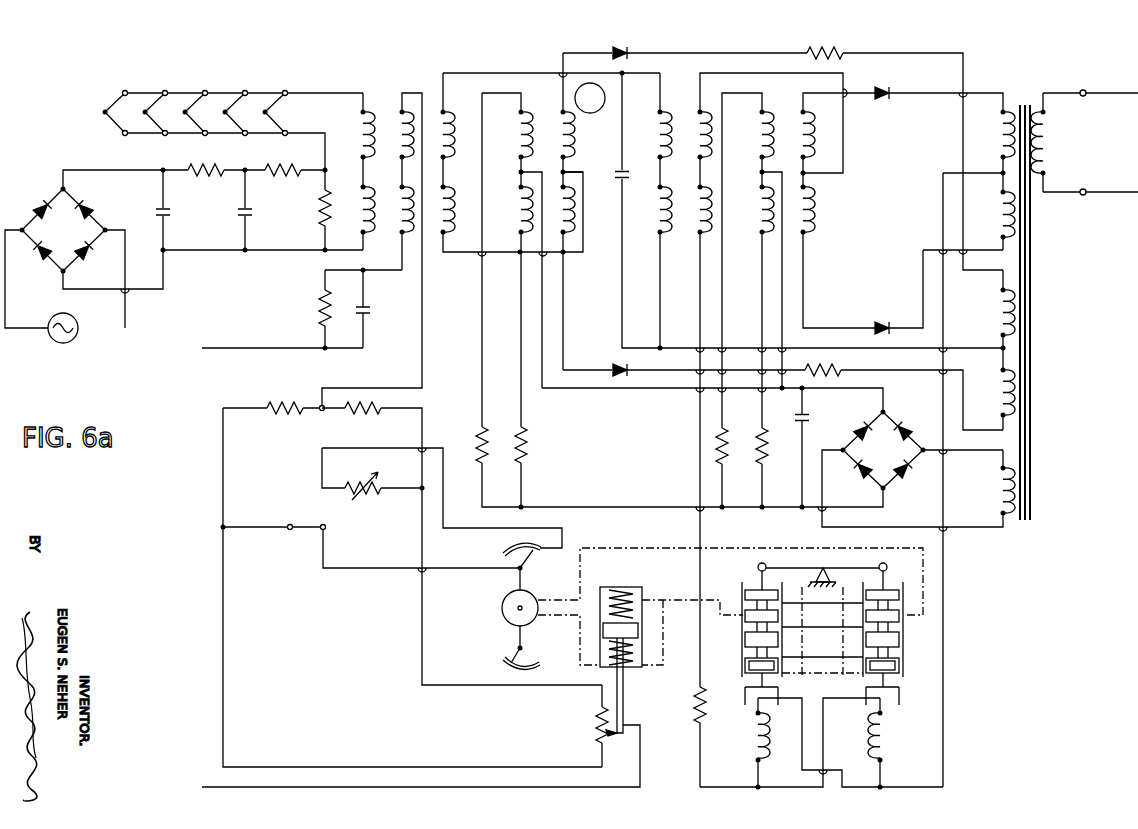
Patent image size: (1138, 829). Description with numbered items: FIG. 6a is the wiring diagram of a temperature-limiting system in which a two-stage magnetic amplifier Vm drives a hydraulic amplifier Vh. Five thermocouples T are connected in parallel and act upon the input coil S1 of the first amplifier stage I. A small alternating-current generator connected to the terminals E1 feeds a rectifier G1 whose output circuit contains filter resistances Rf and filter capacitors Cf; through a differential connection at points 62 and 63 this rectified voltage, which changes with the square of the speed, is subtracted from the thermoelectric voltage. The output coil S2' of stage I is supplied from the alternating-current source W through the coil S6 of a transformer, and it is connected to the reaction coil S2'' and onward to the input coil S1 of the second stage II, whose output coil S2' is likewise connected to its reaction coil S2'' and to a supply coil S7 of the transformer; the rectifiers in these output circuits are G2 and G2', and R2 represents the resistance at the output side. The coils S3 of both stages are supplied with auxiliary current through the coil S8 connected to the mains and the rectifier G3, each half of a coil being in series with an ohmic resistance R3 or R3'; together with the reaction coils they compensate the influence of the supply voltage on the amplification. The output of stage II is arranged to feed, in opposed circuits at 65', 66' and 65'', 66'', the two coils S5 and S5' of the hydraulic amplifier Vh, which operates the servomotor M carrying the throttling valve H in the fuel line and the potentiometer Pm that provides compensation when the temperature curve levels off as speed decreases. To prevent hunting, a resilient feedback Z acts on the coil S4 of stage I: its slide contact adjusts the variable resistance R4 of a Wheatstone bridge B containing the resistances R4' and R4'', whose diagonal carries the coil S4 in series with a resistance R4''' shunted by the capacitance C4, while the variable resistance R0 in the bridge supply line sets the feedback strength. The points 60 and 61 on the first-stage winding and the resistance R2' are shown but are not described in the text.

The terminal of primary winding 60 is at (364, 110).
The terminal of primary winding 61 is at (364, 234).
The differential connection point 62 is at (323, 252).
The differential connection point 63 is at (327, 168).
The coil circuit terminal 65' is at (741, 723).
The coil circuit terminal 65'' is at (863, 766).
The coil circuit terminal 66' is at (777, 771).
The coil circuit terminal 66'' is at (906, 723).
The thermocouple T is at (233, 116).
The rectifier G1 is at (84, 249).
The generator terminals E1 is at (53, 341).
The filter resistance Rf is at (282, 186).
The filter capacitor Cf is at (213, 211).
The input coil S1 is at (662, 212).
The feedback coil S4 is at (372, 250).
The first amplifier stage I is at (393, 139).
The second amplifier stage II is at (743, 37).
The series resistance R4''' is at (307, 310).
The capacitance C4 is at (372, 313).
The bridge resistance R4' is at (274, 394).
The bridge resistance R4'' is at (462, 543).
The variable resistance R0 is at (382, 494).
The Wheatstone bridge B is at (412, 587).
The potentiometer Pm is at (503, 549).
The servomotor M is at (502, 606).
The valve H is at (506, 655).
The resilient feedback Z is at (629, 660).
The variable resistance R4 is at (421, 736).
The resistor R2' is at (687, 509).
The reaction coil S2'' is at (644, 164).
The auxiliary current coil S3 is at (636, 260).
The output coil S2' is at (761, 211).
The magnetic amplifier Vm is at (590, 98).
The rectifier G2 is at (685, 201).
The output resistance R2 is at (904, 227).
The rectifier G2' is at (872, 210).
The supply coil S7 is at (969, 182).
The alternating current source W is at (1084, 142).
The transformer coil S6 is at (992, 350).
The transformer coil S8 is at (918, 490).
The rectifier G3 is at (772, 449).
The ohmic resistance R3 is at (624, 302).
The ohmic resistance R3' is at (731, 469).
The hydraulic amplifier Vh is at (805, 629).
The moving coil S5 is at (746, 744).
The moving coil S5' is at (894, 744).